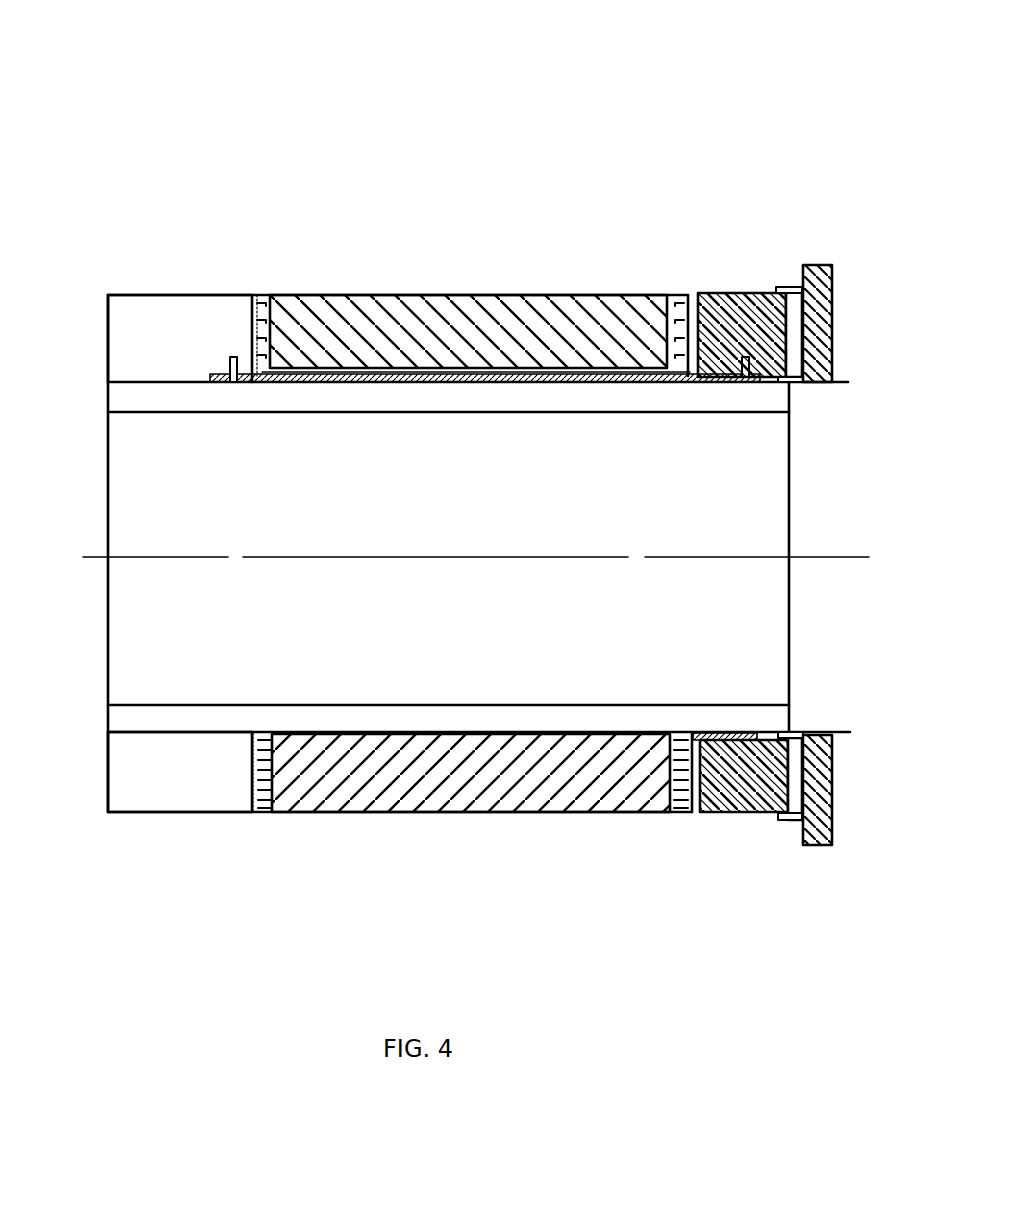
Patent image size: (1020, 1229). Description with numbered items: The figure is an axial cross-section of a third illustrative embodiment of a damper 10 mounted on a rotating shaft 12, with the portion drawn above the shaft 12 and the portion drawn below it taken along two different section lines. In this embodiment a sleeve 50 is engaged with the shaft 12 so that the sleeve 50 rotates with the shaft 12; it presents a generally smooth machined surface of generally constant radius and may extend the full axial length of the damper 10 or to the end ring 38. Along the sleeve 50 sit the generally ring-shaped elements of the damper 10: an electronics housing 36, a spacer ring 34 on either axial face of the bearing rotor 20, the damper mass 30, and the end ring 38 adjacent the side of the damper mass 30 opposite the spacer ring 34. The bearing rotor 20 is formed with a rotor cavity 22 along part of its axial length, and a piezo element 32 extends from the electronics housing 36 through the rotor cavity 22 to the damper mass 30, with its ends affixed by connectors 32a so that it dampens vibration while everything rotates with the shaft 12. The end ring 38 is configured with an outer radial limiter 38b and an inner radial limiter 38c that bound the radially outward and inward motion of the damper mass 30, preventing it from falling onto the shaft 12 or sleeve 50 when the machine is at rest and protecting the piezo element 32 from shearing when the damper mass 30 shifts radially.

The damper 10 is at (458, 143).
The shaft 12 is at (433, 531).
The bearing rotor 20 is at (442, 296).
The rotor cavity 22 is at (366, 383).
The damper mass 30 is at (726, 293).
The piezo element 32 is at (525, 383).
The connector 32a is at (228, 360).
The spacer ring 34 is at (262, 294).
The electronics housing 36 is at (162, 341).
The end ring 38 is at (823, 265).
The outer radial limiter 38b is at (783, 288).
The inner radial limiter 38c is at (793, 383).
The sleeve 50 is at (260, 400).